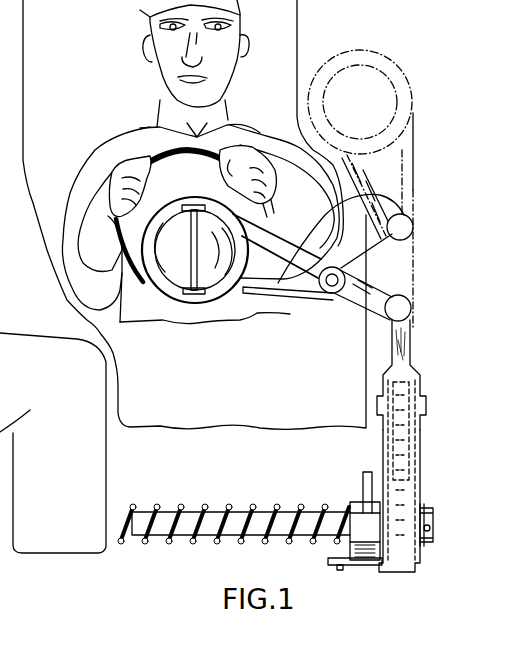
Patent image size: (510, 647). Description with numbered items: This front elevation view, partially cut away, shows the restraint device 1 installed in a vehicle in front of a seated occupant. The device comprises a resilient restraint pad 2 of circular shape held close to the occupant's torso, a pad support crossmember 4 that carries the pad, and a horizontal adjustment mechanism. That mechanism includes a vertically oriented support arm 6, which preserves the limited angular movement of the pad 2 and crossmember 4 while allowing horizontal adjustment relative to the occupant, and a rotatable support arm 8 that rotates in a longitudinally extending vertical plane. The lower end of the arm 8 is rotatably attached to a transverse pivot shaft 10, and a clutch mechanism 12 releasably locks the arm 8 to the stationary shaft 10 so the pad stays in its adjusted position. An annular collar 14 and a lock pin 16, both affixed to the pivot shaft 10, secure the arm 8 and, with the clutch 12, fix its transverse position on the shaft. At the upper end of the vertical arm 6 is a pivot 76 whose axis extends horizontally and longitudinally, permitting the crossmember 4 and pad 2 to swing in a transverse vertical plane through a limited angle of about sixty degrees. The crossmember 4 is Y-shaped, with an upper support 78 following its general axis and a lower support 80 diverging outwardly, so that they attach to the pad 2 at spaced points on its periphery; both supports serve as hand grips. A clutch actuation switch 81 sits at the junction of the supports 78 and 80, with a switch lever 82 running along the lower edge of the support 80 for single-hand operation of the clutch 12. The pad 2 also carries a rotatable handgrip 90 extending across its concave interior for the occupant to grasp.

The restraint device 1 is at (282, 302).
The resilient restraint pad 2 is at (194, 298).
The pad support crossmember 4 is at (394, 283).
The vertically oriented support arm 6 is at (415, 358).
The rotatable support arm 8 is at (418, 458).
The transverse pivot shaft 10 is at (241, 542).
The clutch mechanism 12 is at (365, 565).
The annular collar 14 is at (431, 537).
The lock pin 16 is at (430, 525).
The pivot 76 is at (411, 308).
The upper support 78 is at (393, 217).
The lower support 80 is at (353, 220).
The clutch actuation switch 81 is at (345, 279).
The switch lever 82 is at (331, 295).
The rotatable handgrip 90 is at (187, 283).